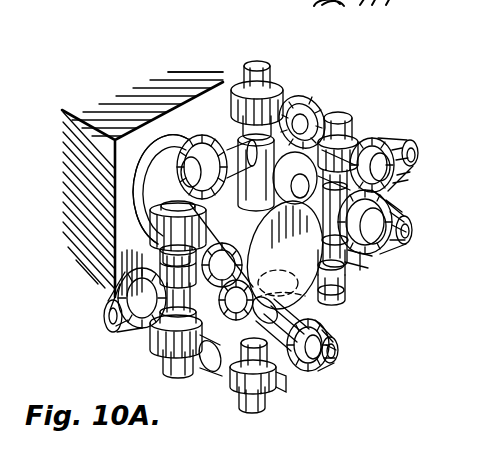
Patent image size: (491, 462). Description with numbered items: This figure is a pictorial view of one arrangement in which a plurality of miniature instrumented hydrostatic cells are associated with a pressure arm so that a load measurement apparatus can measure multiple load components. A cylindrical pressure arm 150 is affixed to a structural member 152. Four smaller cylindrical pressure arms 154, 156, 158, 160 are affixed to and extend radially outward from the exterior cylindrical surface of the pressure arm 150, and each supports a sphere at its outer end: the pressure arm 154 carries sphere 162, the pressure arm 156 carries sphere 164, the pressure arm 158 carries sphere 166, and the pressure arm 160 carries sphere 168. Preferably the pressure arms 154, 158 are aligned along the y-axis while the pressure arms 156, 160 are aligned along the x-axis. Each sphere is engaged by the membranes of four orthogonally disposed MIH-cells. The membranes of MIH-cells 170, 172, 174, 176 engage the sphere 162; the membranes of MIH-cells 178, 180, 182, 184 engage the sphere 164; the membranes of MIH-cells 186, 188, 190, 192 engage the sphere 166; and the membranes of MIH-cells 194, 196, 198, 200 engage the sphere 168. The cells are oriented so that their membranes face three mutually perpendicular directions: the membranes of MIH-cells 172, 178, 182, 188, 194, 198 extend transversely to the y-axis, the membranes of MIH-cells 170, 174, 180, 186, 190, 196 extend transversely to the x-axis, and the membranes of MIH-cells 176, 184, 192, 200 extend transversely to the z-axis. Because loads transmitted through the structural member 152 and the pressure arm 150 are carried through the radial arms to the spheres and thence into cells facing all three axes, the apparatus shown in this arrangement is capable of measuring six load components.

The cylindrical pressure arm 150 is at (181, 145).
The structural member 152 is at (175, 118).
The smaller cylindrical pressure arm 154 is at (255, 195).
The smaller cylindrical pressure arm 156 is at (365, 262).
The smaller cylindrical pressure arm 158 is at (325, 302).
The smaller cylindrical pressure arm 160 is at (255, 252).
The sphere 162 is at (295, 97).
The sphere 164 is at (375, 143).
The sphere 166 is at (228, 387).
The sphere 168 is at (160, 263).
The MIH-cell 170 is at (208, 143).
The MIH-cell 172 is at (274, 76).
The MIH-cell 174 is at (332, 102).
The MIH-cell 176 is at (265, 218).
The MIH-cell 178 is at (360, 123).
The MIH-cell 180 is at (408, 180).
The MIH-cell 182 is at (350, 265).
The MIH-cell 184 is at (402, 213).
The MIH-cell 186 is at (322, 320).
The MIH-cell 188 is at (281, 387).
The MIH-cell 190 is at (223, 370).
The MIH-cell 192 is at (343, 338).
The MIH-cell 194 is at (162, 338).
The MIH-cell 196 is at (112, 288).
The MIH-cell 198 is at (175, 194).
The MIH-cell 200 is at (205, 340).